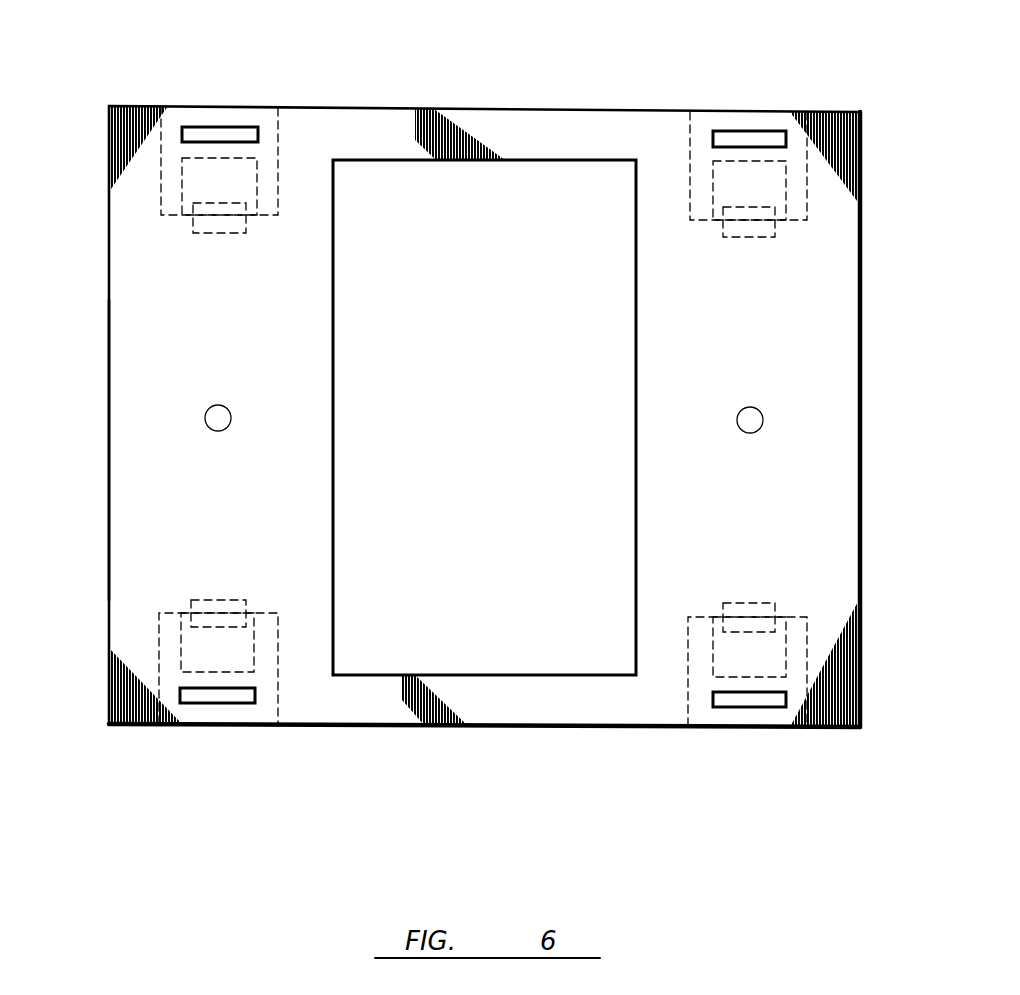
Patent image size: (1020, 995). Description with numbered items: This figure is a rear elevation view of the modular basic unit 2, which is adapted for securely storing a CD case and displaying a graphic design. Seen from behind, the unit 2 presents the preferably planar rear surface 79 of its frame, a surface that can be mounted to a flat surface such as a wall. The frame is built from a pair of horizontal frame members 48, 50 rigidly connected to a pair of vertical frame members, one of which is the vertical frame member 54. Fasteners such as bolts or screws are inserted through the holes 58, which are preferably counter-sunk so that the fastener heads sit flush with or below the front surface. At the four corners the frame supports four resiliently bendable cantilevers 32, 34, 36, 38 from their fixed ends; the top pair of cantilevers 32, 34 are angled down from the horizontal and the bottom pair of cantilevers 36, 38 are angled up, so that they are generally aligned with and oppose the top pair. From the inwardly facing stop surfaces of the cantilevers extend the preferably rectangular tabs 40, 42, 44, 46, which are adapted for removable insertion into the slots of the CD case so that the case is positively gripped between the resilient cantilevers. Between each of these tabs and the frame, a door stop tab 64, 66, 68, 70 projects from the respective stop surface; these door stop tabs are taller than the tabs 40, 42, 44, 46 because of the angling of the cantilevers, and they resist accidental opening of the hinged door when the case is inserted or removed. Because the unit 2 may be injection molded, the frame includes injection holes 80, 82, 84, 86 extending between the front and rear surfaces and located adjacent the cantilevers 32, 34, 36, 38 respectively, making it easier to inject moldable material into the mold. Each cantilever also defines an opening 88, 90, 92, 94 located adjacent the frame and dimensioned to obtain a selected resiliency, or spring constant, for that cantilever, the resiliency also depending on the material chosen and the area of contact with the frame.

The modular basic unit 2 is at (130, 98).
The cantilever 32 is at (807, 190).
The cantilever 34 is at (160, 185).
The cantilever 36 is at (807, 660).
The cantilever 38 is at (160, 660).
The tab 40 is at (742, 237).
The tab 42 is at (213, 233).
The tab 44 is at (757, 603).
The tab 46 is at (200, 600).
The horizontal frame member 48 is at (493, 123).
The horizontal frame member 50 is at (558, 705).
The vertical frame member 54 is at (140, 446).
The holes 58 is at (210, 415).
The door stop tab 64 is at (767, 190).
The door stop tab 66 is at (238, 182).
The door stop tab 68 is at (722, 647).
The door stop tab 70 is at (248, 637).
The rear surface 79 is at (700, 429).
The injection hole 80 is at (765, 138).
The injection hole 82 is at (252, 135).
The injection hole 84 is at (765, 700).
The injection hole 86 is at (197, 697).
The opening 88 is at (731, 120).
The opening 90 is at (208, 118).
The opening 92 is at (733, 718).
The opening 94 is at (230, 710).